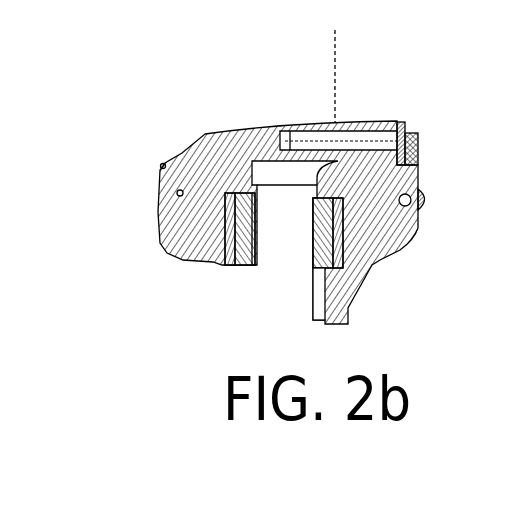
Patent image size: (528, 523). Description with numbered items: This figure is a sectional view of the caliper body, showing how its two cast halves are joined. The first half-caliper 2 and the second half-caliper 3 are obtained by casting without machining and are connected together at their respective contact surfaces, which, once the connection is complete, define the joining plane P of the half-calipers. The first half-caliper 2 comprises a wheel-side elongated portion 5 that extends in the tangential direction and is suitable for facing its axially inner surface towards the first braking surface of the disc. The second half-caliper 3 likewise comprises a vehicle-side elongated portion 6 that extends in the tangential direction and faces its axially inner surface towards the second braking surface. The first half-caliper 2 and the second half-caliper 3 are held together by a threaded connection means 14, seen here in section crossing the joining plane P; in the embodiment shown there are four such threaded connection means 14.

The first half-caliper 2 is at (238, 180).
The second half-caliper 3 is at (403, 177).
The wheel-side elongated portion 5 is at (162, 212).
The vehicle-side elongated portion 6 is at (410, 228).
The threaded connection means 14 is at (337, 126).
The joining plane P is at (319, 67).